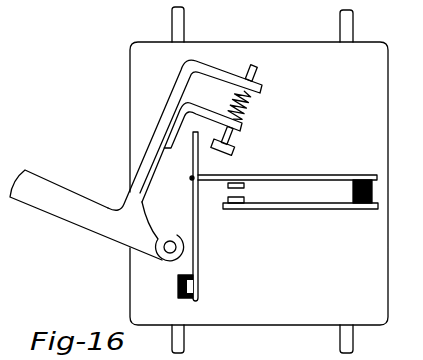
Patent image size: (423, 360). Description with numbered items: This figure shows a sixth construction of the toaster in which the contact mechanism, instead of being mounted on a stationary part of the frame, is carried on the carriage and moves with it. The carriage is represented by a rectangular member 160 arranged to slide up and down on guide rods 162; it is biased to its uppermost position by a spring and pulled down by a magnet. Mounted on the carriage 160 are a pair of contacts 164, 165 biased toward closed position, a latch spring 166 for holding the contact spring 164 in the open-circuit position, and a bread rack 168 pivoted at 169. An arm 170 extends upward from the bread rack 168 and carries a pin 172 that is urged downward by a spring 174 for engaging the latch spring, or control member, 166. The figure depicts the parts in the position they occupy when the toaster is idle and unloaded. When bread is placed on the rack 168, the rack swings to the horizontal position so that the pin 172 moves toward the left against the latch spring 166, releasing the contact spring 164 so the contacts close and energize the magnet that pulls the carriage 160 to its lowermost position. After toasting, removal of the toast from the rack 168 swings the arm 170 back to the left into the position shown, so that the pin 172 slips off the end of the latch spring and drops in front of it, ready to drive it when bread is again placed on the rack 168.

The rectangular member 160 is at (138, 88).
The guide rods 162 is at (176, 24).
The contact spring 164 is at (305, 180).
The contact 165 is at (313, 209).
The latch spring 166 is at (198, 252).
The bread rack 168 is at (69, 198).
The pivot 169 is at (170, 241).
The arm 170 is at (153, 142).
The pin 172 is at (230, 151).
The spring 174 is at (245, 116).